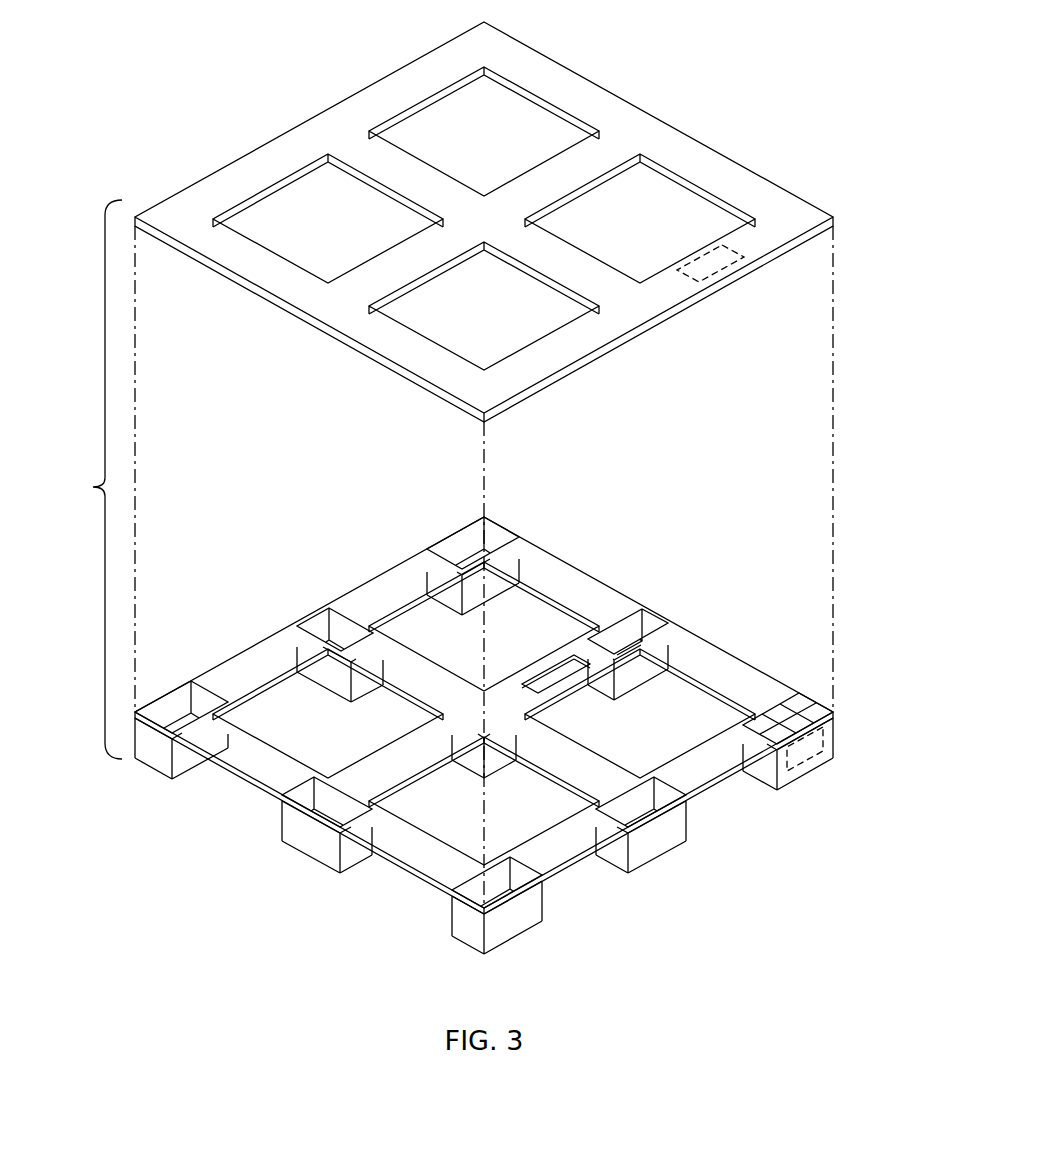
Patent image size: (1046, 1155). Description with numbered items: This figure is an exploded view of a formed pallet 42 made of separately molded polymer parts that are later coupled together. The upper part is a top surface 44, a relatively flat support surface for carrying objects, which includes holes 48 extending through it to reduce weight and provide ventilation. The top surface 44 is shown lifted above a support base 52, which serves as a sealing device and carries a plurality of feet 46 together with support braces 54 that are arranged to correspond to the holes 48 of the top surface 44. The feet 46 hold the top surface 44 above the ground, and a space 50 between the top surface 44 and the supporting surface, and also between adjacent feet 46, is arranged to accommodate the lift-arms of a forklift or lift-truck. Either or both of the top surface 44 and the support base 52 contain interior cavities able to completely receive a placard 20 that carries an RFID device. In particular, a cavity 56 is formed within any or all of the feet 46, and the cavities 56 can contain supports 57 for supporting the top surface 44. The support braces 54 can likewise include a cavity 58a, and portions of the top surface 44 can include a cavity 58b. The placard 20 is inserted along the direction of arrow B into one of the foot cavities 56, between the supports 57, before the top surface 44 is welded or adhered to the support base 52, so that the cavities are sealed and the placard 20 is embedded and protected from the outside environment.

The placard 20 is at (812, 755).
The formed pallet 42 is at (82, 479).
The top surface 44 is at (645, 128).
The feet 46 is at (465, 933).
The holes 48 is at (266, 222).
The space 50 is at (222, 792).
The support base 52 is at (716, 658).
The support braces 54 is at (418, 775).
The cavity 56 is at (455, 548).
The supports 57 is at (808, 698).
The cavity 58a is at (570, 652).
The cavity 58b is at (735, 290).
The arrow B is at (815, 700).